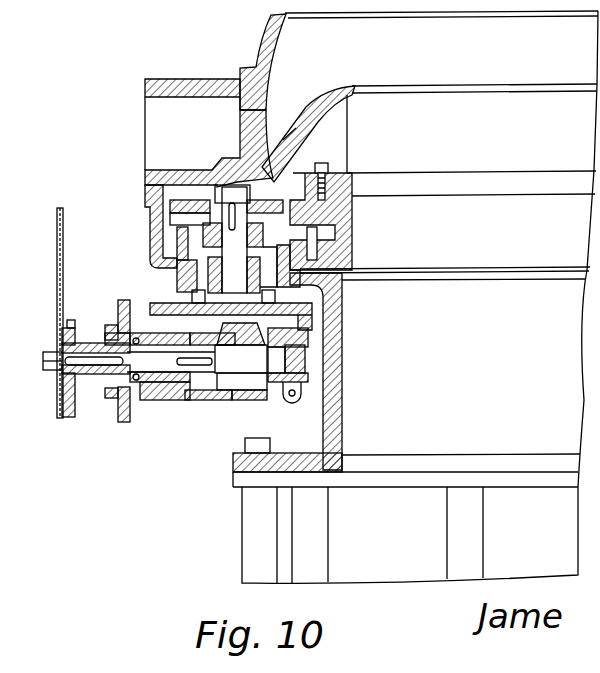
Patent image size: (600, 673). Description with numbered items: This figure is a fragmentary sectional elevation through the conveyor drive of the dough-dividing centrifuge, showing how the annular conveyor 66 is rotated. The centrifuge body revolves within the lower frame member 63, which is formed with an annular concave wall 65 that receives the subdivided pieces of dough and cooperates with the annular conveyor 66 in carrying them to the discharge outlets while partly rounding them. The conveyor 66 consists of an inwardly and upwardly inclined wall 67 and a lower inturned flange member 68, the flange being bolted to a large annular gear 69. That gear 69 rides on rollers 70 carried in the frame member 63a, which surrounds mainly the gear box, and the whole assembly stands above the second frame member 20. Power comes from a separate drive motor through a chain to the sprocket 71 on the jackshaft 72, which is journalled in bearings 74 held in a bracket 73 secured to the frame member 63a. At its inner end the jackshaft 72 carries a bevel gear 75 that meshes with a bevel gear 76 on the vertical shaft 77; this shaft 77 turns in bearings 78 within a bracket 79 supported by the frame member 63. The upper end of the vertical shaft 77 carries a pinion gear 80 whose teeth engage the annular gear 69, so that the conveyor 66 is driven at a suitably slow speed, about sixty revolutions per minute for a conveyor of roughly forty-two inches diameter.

The second frame member 20 is at (252, 538).
The lower frame member 63 is at (165, 128).
The frame member 63a is at (338, 358).
The annular concave wall 65 is at (280, 52).
The annular conveyor 66 is at (282, 139).
The inwardly and upwardly inclined wall 67 is at (325, 122).
The lower inturned flange member 68 is at (348, 172).
The large annular gear 69 is at (352, 212).
The rollers 70 is at (350, 249).
The sprocket 71 is at (70, 413).
The jackshaft 72 is at (152, 373).
The bracket 73 is at (208, 400).
The bearings 74 is at (135, 330).
The bevel gear 75 is at (222, 402).
The bevel gear 76 is at (241, 361).
The vertical shaft 77 is at (197, 282).
The bearings 78 is at (216, 238).
The bracket 79 is at (163, 244).
The pinion gear 80 is at (176, 213).